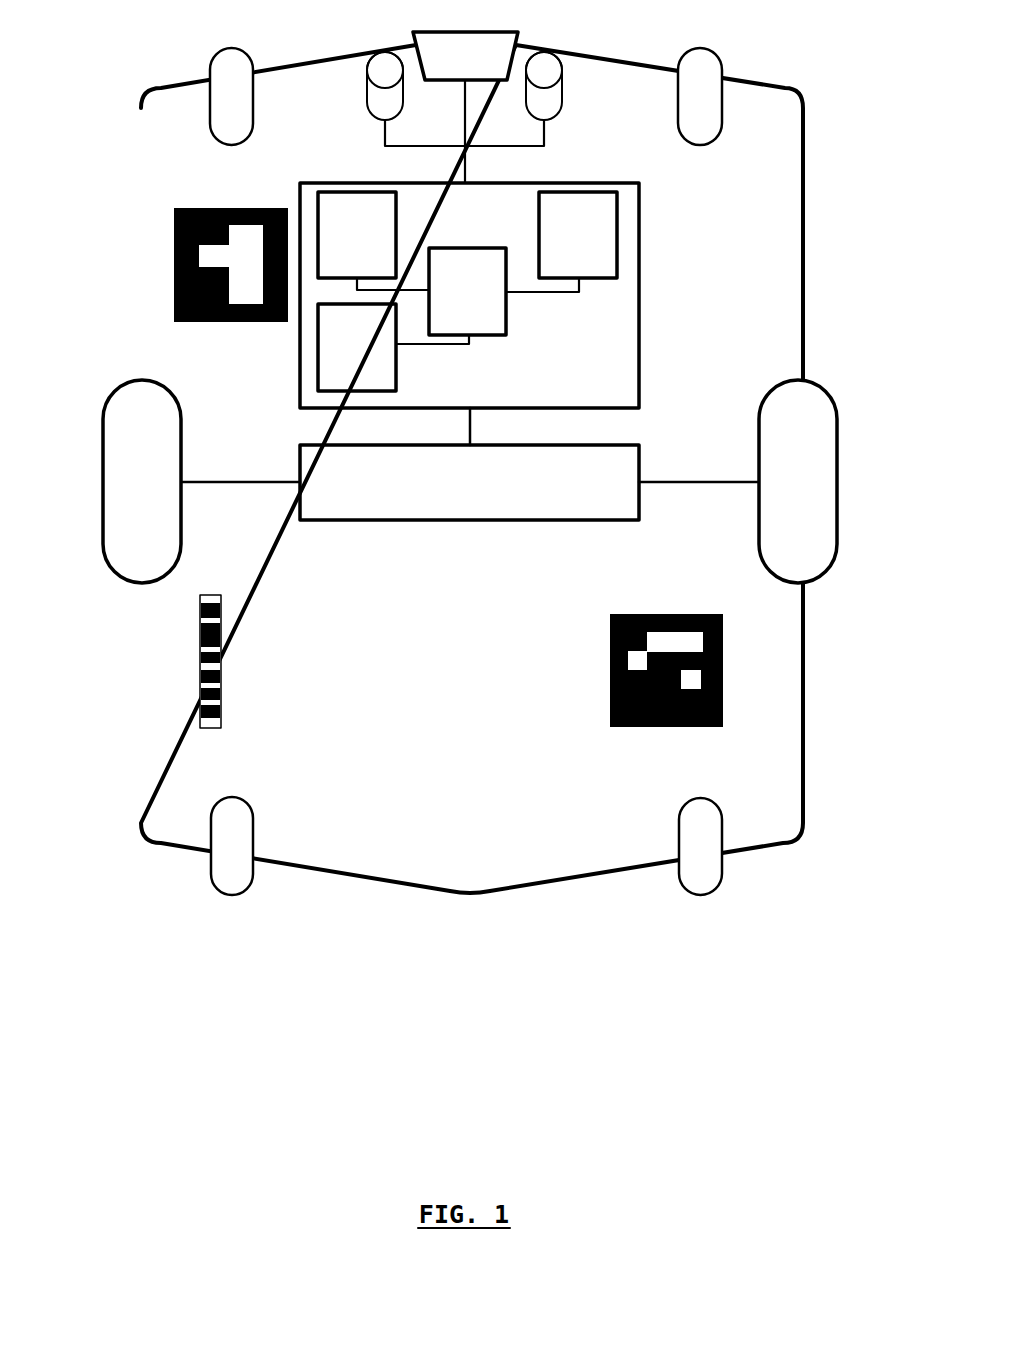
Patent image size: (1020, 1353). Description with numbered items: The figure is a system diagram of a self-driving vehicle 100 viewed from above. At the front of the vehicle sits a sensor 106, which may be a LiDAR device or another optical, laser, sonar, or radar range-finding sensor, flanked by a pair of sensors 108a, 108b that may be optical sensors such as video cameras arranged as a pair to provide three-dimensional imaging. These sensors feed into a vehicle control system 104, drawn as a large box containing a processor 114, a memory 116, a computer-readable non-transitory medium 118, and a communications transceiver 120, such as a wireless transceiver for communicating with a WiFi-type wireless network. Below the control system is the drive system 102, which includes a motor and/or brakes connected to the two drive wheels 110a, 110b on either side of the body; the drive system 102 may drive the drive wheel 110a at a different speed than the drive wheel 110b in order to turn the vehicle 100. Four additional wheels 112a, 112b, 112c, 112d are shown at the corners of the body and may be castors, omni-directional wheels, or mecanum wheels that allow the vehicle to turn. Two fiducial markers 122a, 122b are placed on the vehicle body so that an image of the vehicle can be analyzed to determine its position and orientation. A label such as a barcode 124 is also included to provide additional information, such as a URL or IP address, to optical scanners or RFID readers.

The self-driving vehicle 100 is at (453, 784).
The drive system 102 is at (448, 495).
The vehicle control system 104 is at (444, 230).
The sensor 106 is at (444, 65).
The sensor 108a is at (367, 84).
The sensor 108b is at (562, 83).
The drive wheel 110a is at (103, 482).
The drive wheel 110b is at (837, 482).
The wheel 112a is at (210, 70).
The wheel 112b is at (722, 68).
The wheel 112c is at (211, 867).
The wheel 112d is at (722, 867).
The processor 114 is at (446, 298).
The memory 116 is at (335, 243).
The computer-readable non-transitory medium 118 is at (557, 243).
The communications transceiver 120 is at (335, 353).
The fiducial marker 122a is at (174, 265).
The fiducial marker 122b is at (610, 670).
The barcode 124 is at (221, 637).